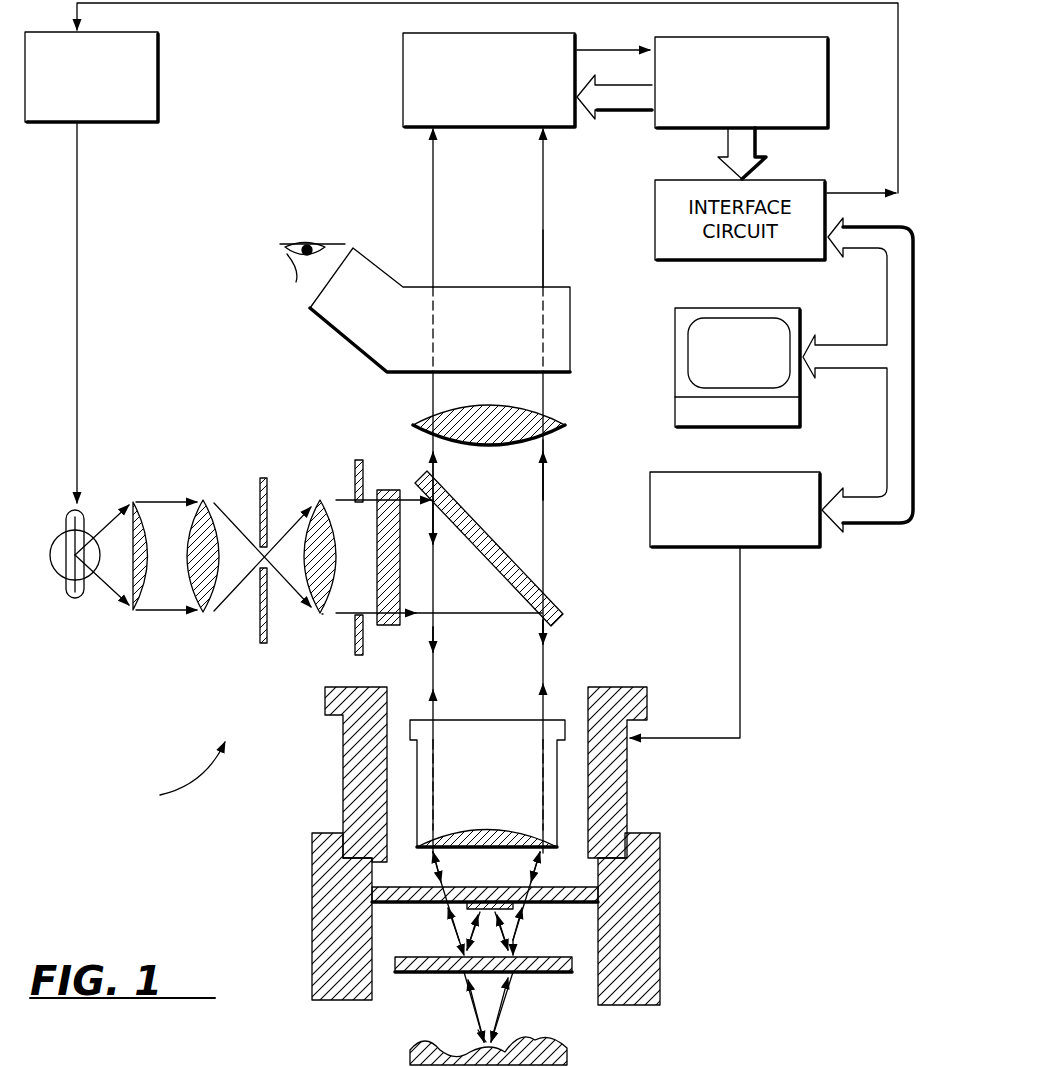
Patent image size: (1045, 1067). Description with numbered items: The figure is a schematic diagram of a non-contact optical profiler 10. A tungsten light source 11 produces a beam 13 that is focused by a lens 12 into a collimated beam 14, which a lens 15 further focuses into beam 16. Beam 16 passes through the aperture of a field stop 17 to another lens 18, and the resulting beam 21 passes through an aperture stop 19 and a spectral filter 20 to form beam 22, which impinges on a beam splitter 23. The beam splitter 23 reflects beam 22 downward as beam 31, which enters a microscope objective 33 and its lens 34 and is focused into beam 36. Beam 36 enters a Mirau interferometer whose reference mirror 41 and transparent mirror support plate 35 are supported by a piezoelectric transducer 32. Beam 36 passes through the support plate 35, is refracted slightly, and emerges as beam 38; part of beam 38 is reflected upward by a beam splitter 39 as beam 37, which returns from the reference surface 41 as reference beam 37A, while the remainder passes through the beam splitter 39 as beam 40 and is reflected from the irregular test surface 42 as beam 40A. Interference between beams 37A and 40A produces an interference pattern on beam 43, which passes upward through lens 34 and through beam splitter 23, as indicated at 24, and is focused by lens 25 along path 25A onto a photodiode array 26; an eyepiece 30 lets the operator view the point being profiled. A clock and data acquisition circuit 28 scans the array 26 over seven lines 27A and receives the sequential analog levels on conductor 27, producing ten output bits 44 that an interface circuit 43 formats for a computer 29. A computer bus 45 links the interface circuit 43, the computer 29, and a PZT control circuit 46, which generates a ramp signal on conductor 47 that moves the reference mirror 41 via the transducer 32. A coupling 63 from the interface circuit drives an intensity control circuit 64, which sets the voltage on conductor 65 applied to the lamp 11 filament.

The optical profiler 10 is at (176, 774).
The tungsten light source 11 is at (62, 585).
The lens 12 is at (147, 556).
The beam 13 is at (103, 588).
The collimated beam 14 is at (158, 612).
The lens 15 is at (195, 572).
The beam 16 is at (246, 486).
The field stop 17 is at (268, 496).
The lens 18 is at (327, 546).
The aperture stop 19 is at (354, 470).
The spectral filter 20 is at (385, 592).
The beam 21 is at (323, 614).
The beam 22 is at (420, 618).
The beam splitter 23 is at (565, 622).
The interference beam portion 24 is at (544, 500).
The lens 25 is at (566, 424).
The light beam to detector 25A is at (544, 245).
The photodiode array 26 is at (548, 16).
The conductor 27 is at (622, 46).
The lines 27A is at (626, 104).
The clock and data acquisition circuit 28 is at (792, 37).
The computer 29 is at (768, 308).
The eyepiece 30 is at (360, 252).
The beam 31 is at (545, 640).
The piezoelectric transducer 32 is at (655, 700).
The microscope objective 33 is at (420, 720).
The lens 34 is at (500, 830).
The transparent mirror support plate 35 is at (382, 900).
The beam 36 is at (435, 878).
The beam 37 is at (500, 920).
The reference beam 37A is at (505, 990).
The beam 38 is at (460, 946).
The beam splitter 39 is at (420, 972).
The beam 40 is at (480, 1038).
The reflected beam 40A is at (453, 1017).
The reference mirror 41 is at (497, 903).
The test surface 42 is at (547, 1046).
The interference beam 43 is at (818, 182).
The output bits 44 is at (752, 160).
The computer bus 45 is at (905, 232).
The PZT control circuit 46 is at (812, 455).
The conductor 47 is at (742, 600).
The coupling 63 is at (213, 3).
The intensity control circuit 64 is at (160, 50).
The conductor 65 is at (78, 348).